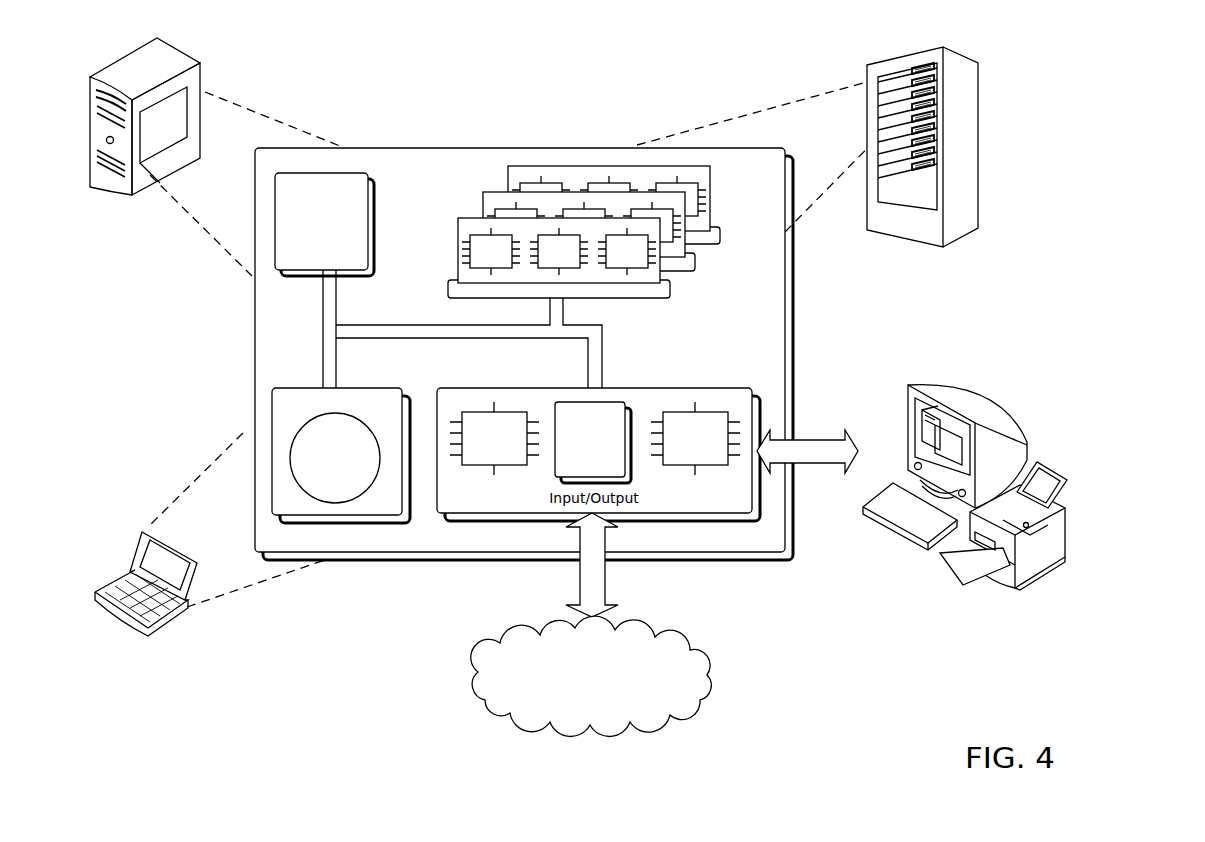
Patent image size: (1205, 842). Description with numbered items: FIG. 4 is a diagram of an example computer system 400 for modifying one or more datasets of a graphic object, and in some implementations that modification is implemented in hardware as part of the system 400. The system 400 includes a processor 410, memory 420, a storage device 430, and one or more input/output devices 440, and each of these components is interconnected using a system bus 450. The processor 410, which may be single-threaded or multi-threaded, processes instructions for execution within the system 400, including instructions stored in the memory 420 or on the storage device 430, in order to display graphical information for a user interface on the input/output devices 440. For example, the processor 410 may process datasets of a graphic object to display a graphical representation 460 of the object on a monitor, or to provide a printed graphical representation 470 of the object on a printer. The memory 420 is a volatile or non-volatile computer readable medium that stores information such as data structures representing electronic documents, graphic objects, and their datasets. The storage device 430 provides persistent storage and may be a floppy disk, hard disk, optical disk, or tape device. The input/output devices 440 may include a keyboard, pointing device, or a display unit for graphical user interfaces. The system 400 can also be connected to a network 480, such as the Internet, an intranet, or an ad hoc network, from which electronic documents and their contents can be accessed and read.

The computer system 400 is at (514, 50).
The processor 410 is at (324, 224).
The memory 420 is at (716, 265).
The storage device 430 is at (394, 411).
The input/output devices 440 is at (1057, 394).
The system bus 450 is at (476, 343).
The graphical representation 460 is at (906, 427).
The printed graphical representation 470 is at (1062, 472).
The network 480 is at (483, 655).